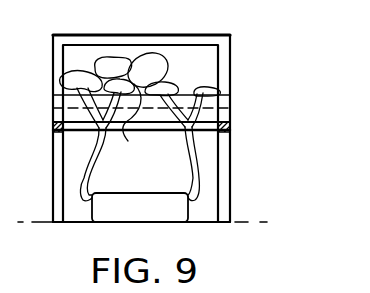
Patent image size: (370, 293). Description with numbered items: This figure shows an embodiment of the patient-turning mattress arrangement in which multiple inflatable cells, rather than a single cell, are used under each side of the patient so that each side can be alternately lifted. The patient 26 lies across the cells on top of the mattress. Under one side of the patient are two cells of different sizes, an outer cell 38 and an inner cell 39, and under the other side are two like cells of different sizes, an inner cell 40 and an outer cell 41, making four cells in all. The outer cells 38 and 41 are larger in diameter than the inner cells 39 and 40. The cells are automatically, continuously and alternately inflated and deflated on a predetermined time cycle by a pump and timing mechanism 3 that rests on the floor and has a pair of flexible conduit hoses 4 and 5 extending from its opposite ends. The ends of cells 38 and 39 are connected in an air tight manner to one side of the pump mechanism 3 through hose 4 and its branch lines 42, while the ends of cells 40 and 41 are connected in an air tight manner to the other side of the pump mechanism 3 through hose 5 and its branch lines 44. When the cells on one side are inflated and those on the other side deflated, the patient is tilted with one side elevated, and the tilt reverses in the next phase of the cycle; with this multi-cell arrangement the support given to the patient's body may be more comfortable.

The pump and timing mechanism 3 is at (97, 223).
The flexible conduit hose 4 is at (89, 177).
The flexible conduit hose 5 is at (196, 164).
The strand body 26 is at (130, 55).
The outer cell 38 is at (61, 81).
The inner cell 39 is at (139, 120).
The inner cell 40 is at (168, 70).
The outer cell 41 is at (207, 90).
The branch lines 42 is at (110, 93).
The branch lines 44 is at (196, 114).